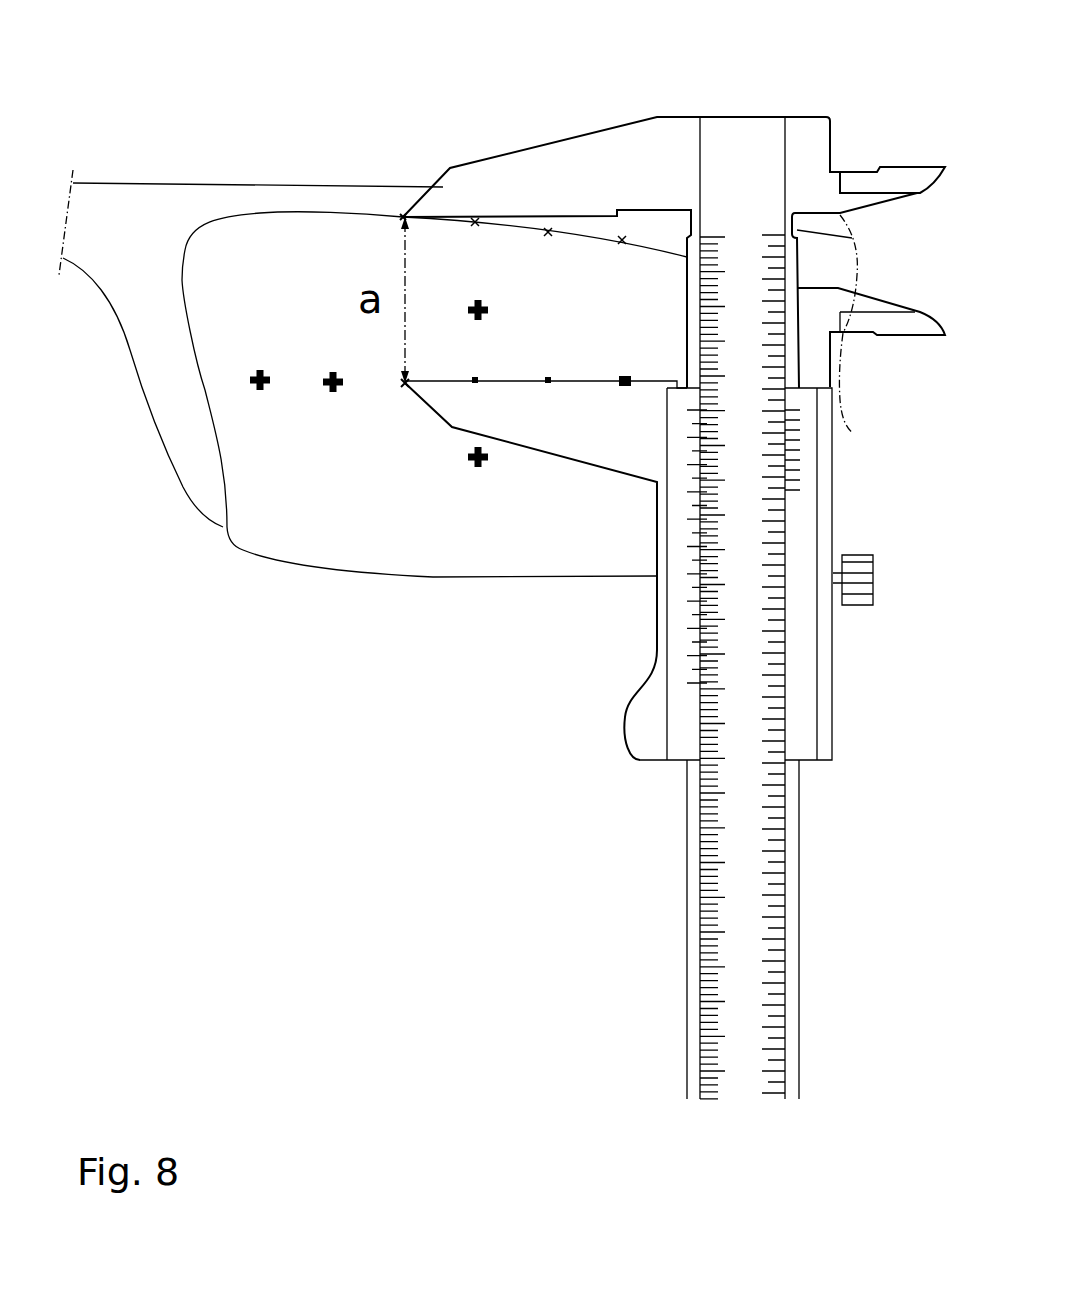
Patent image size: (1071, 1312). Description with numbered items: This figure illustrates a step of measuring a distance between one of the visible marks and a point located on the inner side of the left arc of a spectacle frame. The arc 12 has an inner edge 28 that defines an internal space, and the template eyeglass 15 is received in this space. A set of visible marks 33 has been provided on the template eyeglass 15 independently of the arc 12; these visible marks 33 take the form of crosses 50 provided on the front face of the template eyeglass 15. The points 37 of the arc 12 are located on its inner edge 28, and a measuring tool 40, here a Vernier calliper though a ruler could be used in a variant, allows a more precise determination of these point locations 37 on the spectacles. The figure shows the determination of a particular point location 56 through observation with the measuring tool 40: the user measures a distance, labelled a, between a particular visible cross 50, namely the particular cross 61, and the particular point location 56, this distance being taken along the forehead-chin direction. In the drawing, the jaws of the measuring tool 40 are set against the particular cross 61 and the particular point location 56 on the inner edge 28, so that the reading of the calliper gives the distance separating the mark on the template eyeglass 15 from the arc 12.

The arc 12 is at (150, 347).
The template eyeglass 15 is at (447, 580).
The inner edge 28 is at (292, 213).
The visible marks 33 is at (280, 451).
The points 37 is at (403, 217).
The measuring tool 40 is at (620, 127).
The crosses 50 is at (333, 393).
The particular point location 56 is at (403, 217).
The particular cross 61 is at (403, 385).